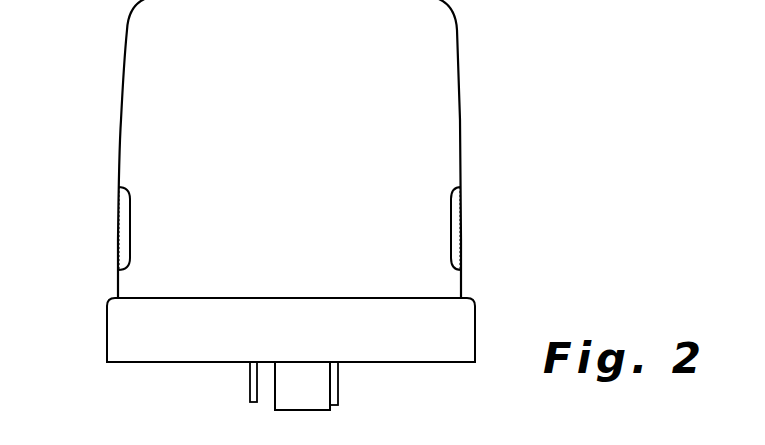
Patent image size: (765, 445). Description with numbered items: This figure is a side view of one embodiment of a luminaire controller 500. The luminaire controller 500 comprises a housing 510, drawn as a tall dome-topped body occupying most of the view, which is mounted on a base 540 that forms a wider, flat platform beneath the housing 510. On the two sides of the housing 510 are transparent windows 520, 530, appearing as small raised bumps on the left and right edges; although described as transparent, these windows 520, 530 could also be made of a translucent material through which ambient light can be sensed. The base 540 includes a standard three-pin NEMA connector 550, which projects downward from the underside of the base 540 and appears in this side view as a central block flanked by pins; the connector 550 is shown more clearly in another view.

The luminaire controller 500 is at (474, 101).
The housing 510 is at (306, 169).
The transparent window 520 is at (123, 233).
The transparent window 530 is at (458, 232).
The base 540 is at (462, 332).
The three-pin NEMA connector 550 is at (356, 382).